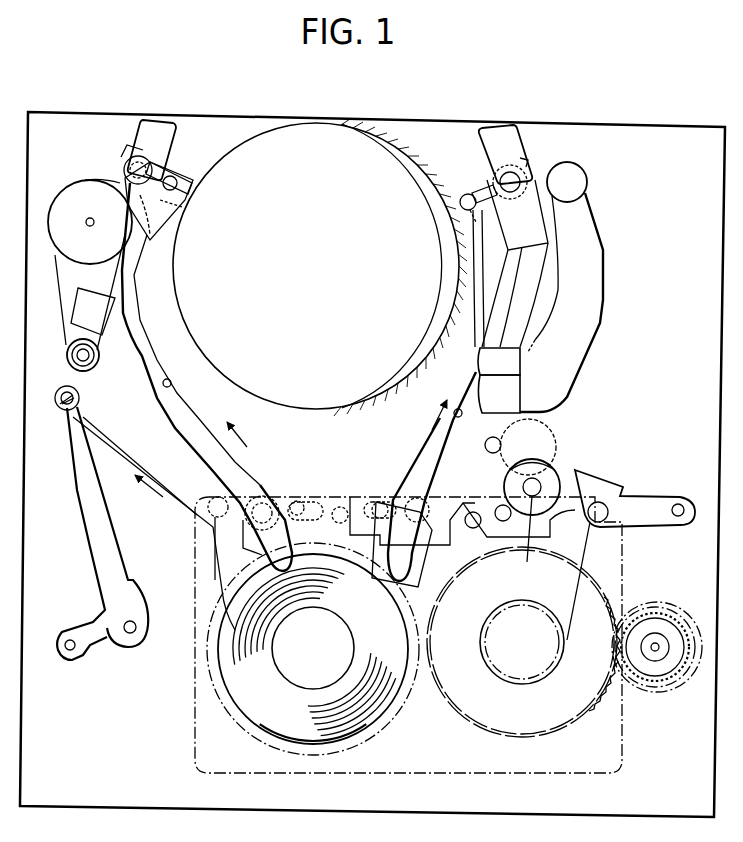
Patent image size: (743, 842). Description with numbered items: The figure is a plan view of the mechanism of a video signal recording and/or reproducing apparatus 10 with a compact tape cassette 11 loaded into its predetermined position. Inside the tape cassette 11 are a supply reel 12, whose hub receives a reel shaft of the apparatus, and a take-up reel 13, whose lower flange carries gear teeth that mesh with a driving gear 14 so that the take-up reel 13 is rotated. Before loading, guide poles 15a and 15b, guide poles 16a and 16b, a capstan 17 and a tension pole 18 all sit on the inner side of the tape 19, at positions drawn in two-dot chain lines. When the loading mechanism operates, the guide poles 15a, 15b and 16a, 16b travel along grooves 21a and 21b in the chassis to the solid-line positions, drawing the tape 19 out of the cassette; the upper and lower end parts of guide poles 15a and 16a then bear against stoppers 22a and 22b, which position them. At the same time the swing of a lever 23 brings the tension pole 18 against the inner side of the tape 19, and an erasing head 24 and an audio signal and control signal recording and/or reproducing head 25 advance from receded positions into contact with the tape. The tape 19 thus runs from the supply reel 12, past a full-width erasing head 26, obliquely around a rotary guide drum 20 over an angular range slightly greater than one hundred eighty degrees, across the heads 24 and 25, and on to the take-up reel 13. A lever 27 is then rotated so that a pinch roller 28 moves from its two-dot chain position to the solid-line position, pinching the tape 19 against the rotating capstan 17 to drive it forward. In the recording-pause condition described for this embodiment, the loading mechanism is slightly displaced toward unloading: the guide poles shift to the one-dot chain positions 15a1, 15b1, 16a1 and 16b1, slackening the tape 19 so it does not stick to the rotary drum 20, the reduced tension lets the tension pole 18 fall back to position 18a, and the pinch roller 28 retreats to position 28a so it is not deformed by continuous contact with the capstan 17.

The video signal recording and/or reproducing apparatus 10 is at (603, 105).
The tape cassette 11 is at (622, 762).
The supply reel 12 is at (392, 712).
The take-up reel 13 is at (583, 725).
The driving gear 14 is at (672, 690).
The guide pole 15a is at (130, 150).
The guide pole 15b is at (176, 178).
The displaced position of guide pole 15a 15a1 is at (152, 234).
The displaced position of guide pole 15b 15b1 is at (182, 210).
The guide pole 16a is at (520, 178).
The guide pole 16b is at (469, 192).
The displaced position of guide pole 16a 16a1 is at (516, 282).
The displaced position of guide pole 16b 16b1 is at (468, 208).
The capstan 17 is at (490, 527).
The tension pole 18 is at (80, 396).
The displaced position of tension pole 18a is at (80, 407).
The tape 19 is at (126, 457).
The rotary guide drum 20 is at (295, 136).
The groove 21a is at (171, 385).
The groove 21b is at (458, 409).
The stopper 22a is at (158, 125).
The stopper 22b is at (503, 135).
The lever 23 is at (87, 533).
The erasing head 24 is at (516, 363).
The audio signal and control signal recording and/or reproducing head 25 is at (516, 392).
The full-width erasing head 26 is at (76, 301).
The lever 27 is at (640, 530).
The pinch roller 28 is at (552, 433).
The displaced position of pinch roller 28a is at (557, 457).